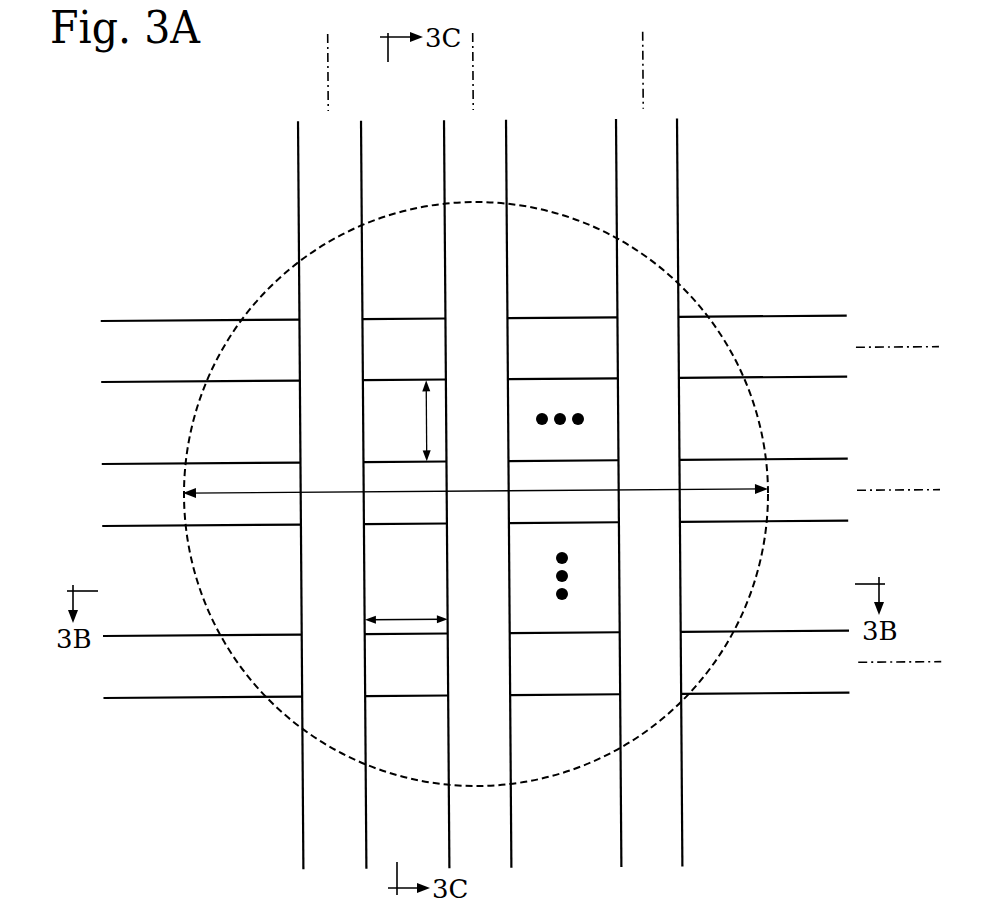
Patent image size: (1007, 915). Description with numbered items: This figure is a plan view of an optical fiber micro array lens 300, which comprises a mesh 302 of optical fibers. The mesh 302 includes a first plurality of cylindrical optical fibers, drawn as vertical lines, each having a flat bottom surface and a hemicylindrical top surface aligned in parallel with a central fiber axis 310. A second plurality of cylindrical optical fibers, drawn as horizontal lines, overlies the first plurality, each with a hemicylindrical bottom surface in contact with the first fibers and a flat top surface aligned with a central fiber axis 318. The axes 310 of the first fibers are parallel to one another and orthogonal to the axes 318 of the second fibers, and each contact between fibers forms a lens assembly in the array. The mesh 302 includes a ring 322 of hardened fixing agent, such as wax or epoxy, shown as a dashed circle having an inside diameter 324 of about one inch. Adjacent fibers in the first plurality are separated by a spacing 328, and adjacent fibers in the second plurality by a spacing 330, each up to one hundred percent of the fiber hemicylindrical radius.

The micro array lens 300 is at (850, 129).
The mesh of optical fibers 302 is at (593, 283).
The central fiber axis 310 is at (328, 75).
The central fiber axis 318 is at (897, 490).
The ring of fixing agent 322 is at (694, 297).
The inside diameter 324 is at (263, 492).
The spacing 328 is at (392, 618).
The spacing 330 is at (426, 440).